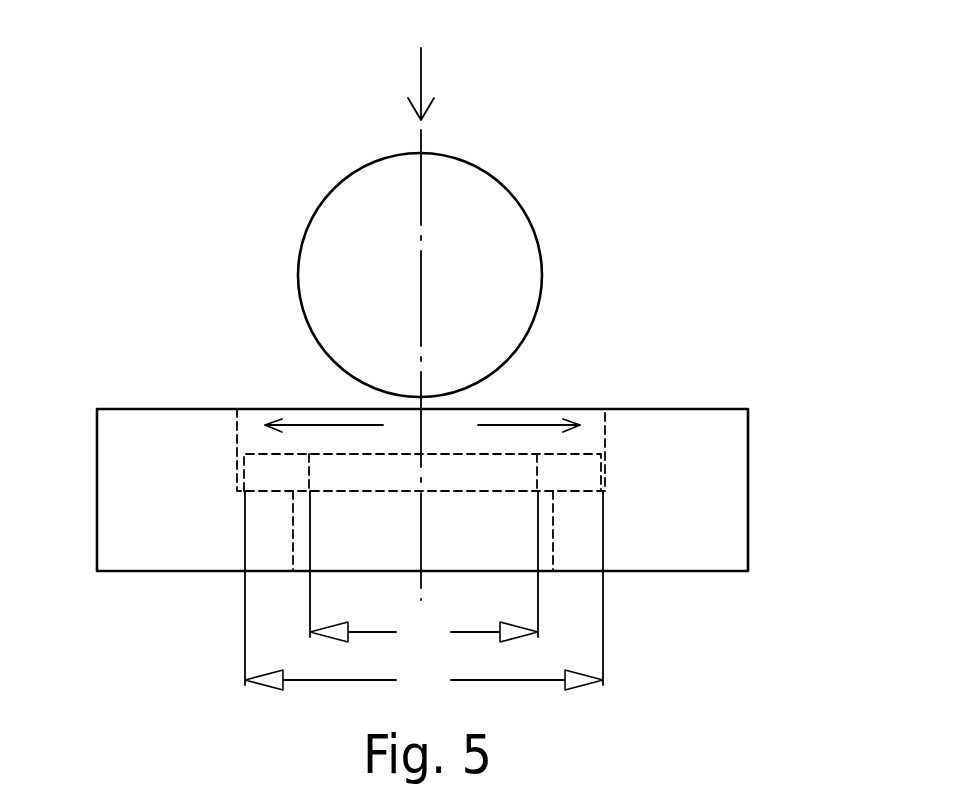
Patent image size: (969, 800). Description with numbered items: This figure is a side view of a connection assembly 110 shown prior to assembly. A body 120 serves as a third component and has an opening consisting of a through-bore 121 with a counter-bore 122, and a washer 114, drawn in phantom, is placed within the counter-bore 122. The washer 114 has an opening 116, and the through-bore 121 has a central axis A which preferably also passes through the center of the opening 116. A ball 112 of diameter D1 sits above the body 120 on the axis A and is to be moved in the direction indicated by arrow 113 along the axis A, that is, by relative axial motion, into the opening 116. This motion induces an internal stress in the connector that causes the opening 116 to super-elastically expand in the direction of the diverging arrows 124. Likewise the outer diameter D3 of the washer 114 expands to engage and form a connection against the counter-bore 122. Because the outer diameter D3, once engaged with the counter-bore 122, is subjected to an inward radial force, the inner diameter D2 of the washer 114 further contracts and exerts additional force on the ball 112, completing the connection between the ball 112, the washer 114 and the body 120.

The connection assembly 110 is at (122, 214).
The ball 112 is at (502, 227).
The arrow 113 is at (412, 72).
The washer 114 is at (583, 470).
The opening 116 is at (536, 472).
The body 120 is at (732, 487).
The through-bore 121 is at (553, 535).
The counter-bore 122 is at (606, 426).
The diverging arrows 124 is at (318, 427).
The central axis A is at (421, 143).
The ball diameter D1 is at (337, 185).
The inner diameter D2 is at (424, 569).
The outer diameter D3 is at (424, 593).